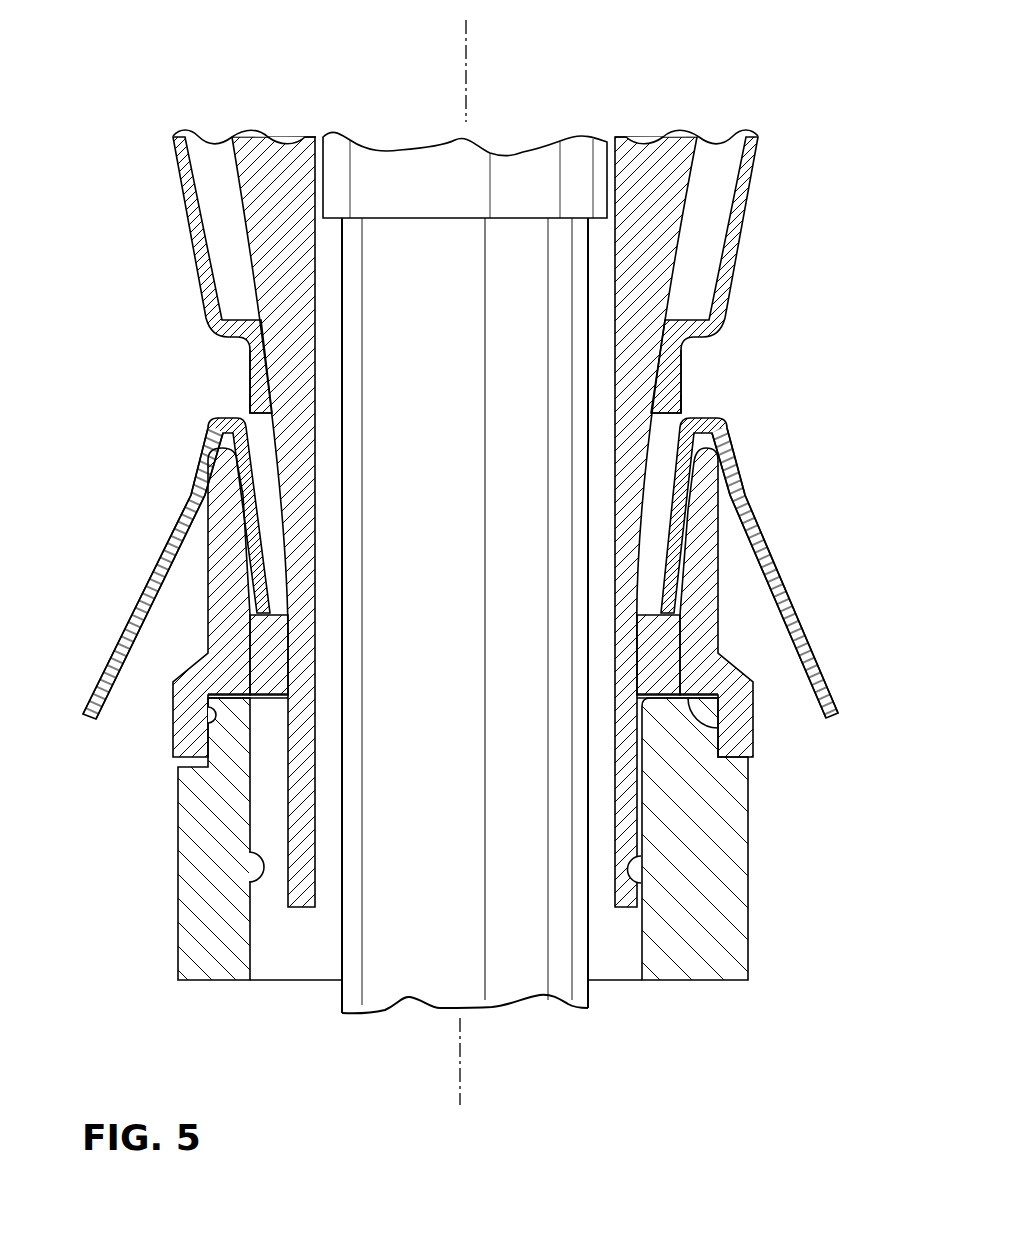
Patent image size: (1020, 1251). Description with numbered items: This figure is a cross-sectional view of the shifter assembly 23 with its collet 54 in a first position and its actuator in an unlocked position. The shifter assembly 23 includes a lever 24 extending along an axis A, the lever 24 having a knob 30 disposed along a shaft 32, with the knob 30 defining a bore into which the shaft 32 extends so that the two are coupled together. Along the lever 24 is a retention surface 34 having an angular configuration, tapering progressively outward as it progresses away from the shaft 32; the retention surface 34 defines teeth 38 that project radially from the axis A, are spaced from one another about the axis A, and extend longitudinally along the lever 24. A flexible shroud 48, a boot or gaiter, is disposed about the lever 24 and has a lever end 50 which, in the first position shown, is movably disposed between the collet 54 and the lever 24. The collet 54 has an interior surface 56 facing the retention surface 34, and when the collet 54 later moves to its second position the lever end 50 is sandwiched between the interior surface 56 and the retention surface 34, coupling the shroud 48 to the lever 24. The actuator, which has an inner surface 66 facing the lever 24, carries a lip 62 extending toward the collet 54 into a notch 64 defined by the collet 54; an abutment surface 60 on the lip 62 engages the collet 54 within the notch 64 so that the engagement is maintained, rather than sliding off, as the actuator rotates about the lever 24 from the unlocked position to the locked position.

The axis A is at (467, 93).
The shifter assembly 23 is at (448, 495).
The lever 24 is at (480, 747).
The knob 30 is at (755, 169).
The shaft 32 is at (532, 948).
The retention surface 34 is at (250, 370).
The teeth 38 is at (250, 402).
The shroud 48 is at (142, 609).
The lever end 50 is at (473, 568).
The collet 54 is at (703, 603).
The interior surface 56 is at (250, 650).
The abutment surface 60 is at (233, 697).
The lip 62 is at (480, 839).
The notch 64 is at (213, 712).
The inner surface 66 is at (248, 885).